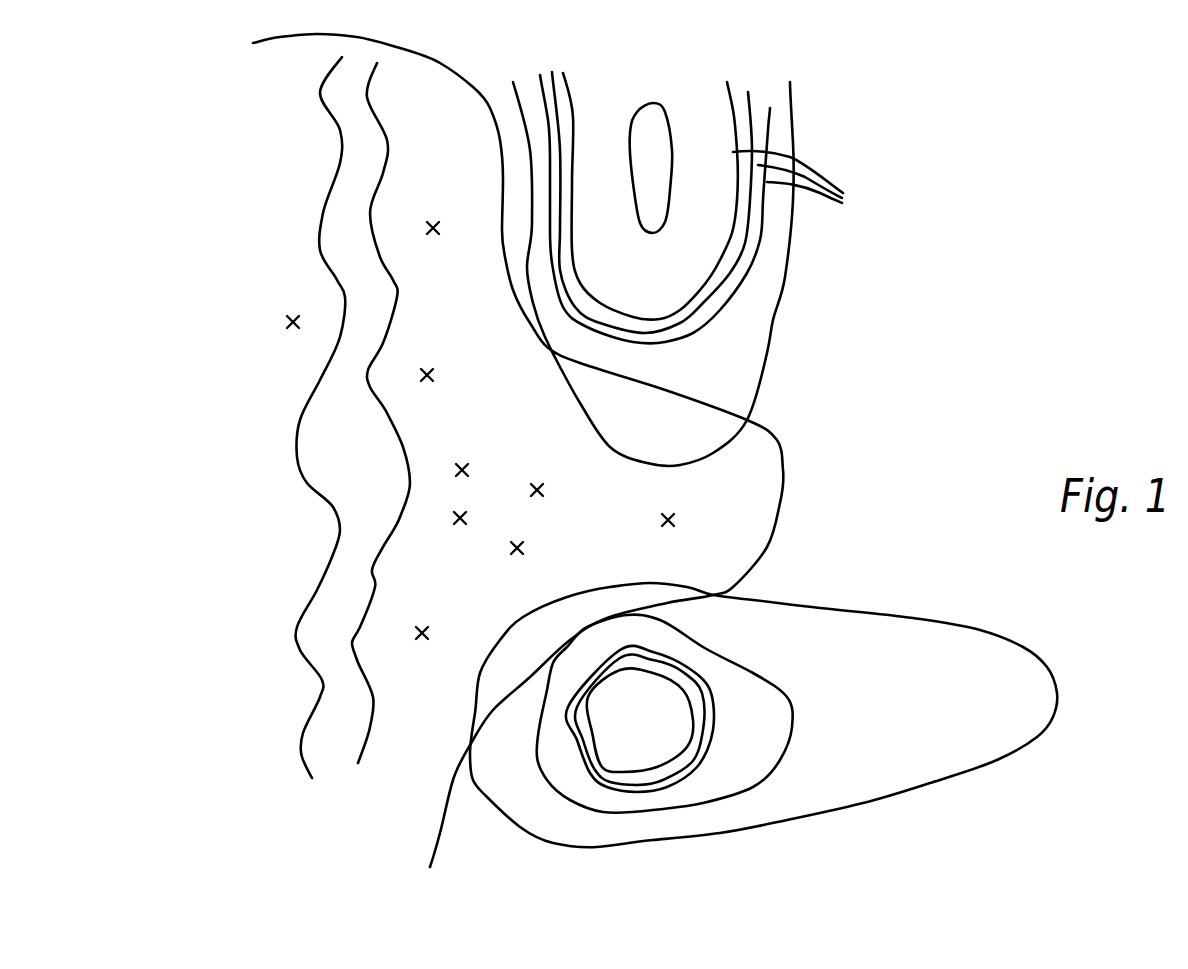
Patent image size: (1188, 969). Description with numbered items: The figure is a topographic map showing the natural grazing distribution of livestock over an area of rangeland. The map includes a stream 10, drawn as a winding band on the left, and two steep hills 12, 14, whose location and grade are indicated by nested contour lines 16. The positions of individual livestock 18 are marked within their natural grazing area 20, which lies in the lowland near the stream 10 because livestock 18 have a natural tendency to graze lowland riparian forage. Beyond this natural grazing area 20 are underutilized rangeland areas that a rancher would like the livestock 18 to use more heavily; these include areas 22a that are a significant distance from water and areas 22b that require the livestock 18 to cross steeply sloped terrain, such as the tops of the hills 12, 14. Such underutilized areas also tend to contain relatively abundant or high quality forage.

The stream 10 is at (368, 476).
The steep hill 12 is at (665, 292).
The steep hill 14 is at (758, 757).
The contour lines 16 is at (800, 184).
The livestock 18 is at (470, 465).
The natural grazing area 20 is at (290, 167).
The underutilized rangeland area distant from water 22a is at (979, 352).
The underutilized rangeland area requiring crossing of steep terrain 22b is at (666, 157).